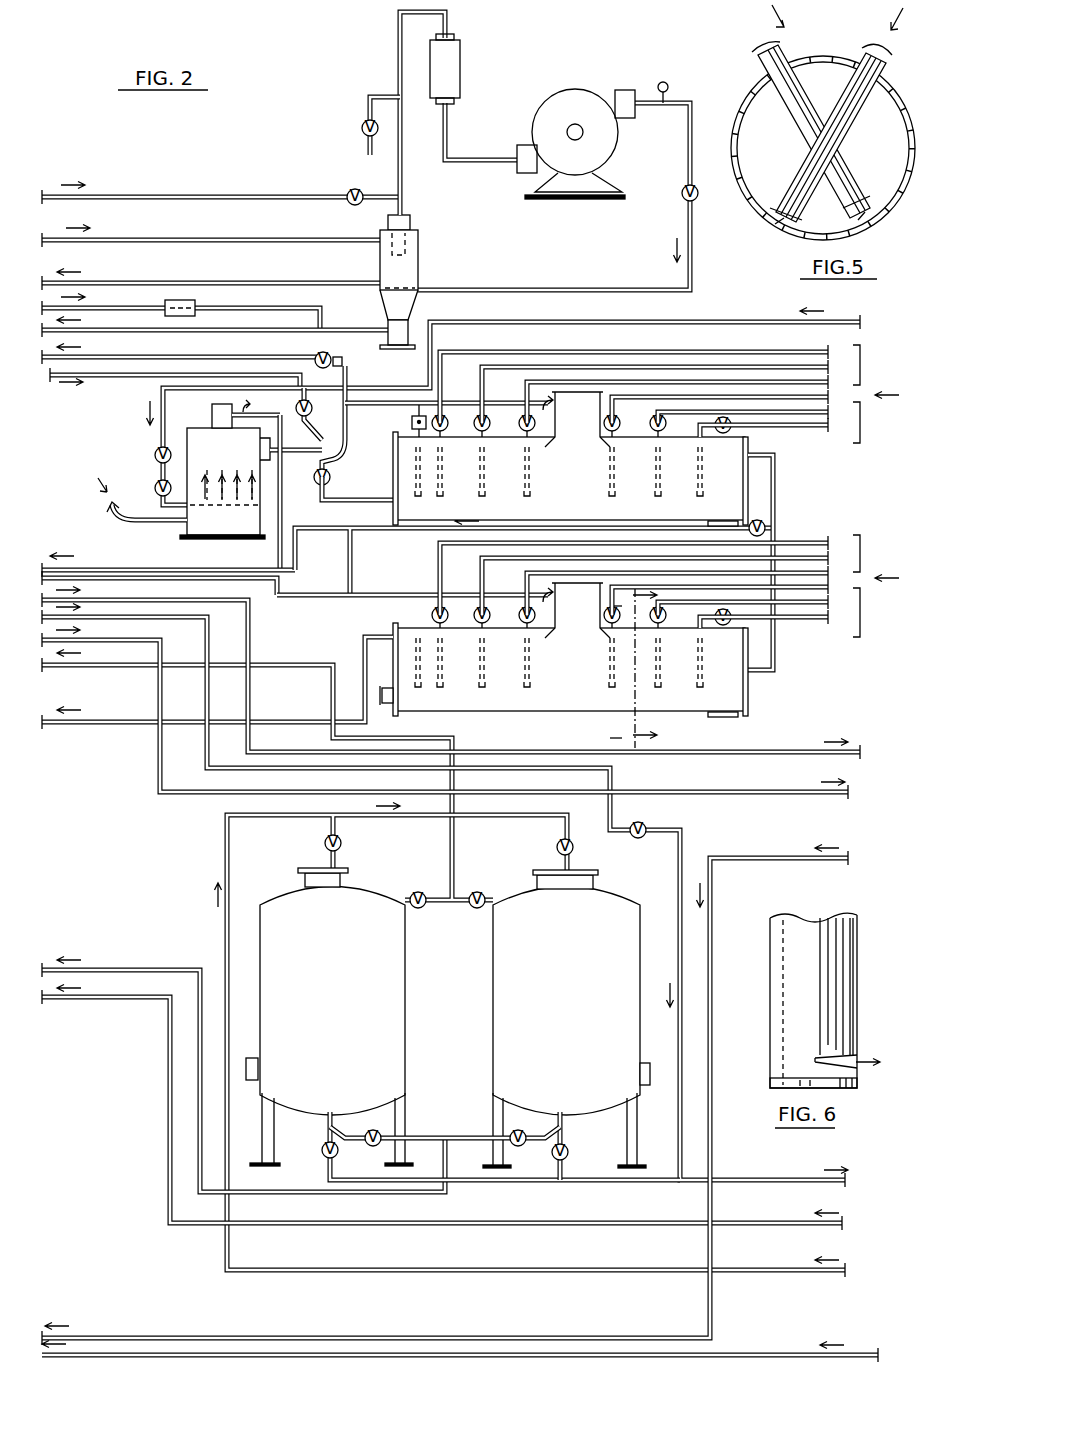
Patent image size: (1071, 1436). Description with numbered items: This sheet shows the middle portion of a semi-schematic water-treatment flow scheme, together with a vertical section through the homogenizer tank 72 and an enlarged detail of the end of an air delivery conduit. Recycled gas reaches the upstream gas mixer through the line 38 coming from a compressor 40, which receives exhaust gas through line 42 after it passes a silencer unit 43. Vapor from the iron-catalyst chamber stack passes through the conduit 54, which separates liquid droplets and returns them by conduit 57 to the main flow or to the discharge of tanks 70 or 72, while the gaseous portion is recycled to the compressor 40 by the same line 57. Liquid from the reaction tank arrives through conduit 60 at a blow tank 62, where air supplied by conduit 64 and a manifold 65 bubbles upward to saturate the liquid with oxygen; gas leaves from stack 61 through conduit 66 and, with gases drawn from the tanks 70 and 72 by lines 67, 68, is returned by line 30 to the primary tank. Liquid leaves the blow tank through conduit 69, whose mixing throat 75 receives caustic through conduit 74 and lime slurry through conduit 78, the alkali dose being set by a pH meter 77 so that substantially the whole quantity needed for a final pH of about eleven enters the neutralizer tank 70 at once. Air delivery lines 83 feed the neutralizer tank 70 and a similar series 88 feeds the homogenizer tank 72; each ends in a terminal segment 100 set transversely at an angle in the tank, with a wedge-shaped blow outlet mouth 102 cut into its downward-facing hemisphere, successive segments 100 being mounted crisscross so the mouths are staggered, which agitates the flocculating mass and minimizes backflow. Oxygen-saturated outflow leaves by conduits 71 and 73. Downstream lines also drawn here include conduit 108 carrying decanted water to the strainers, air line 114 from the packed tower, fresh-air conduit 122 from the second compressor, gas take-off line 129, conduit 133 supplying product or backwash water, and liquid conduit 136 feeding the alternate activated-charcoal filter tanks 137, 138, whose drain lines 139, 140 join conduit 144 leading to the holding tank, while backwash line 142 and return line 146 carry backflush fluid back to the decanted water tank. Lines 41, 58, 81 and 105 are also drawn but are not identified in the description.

In FIG. 2, the line 30 is at (130, 569).
In FIG. 2, the line 38 is at (48, 282).
In FIG. 2, the compressor 40 is at (565, 108).
In FIG. 2, the conduit 41 is at (50, 193).
In FIG. 2, the line 42 is at (362, 150).
In FIG. 2, the silencer unit 43 is at (455, 58).
In FIG. 2, the conduit 54 is at (48, 237).
In FIG. 2, the conduit 57 is at (55, 330).
In FIG. 2, the conduit 58 is at (405, 163).
In FIG. 2, the conduit 60 is at (120, 518).
In FIG. 2, the stack 61 is at (212, 415).
In FIG. 2, the blow tank 62 is at (208, 523).
In FIG. 2, the conduit 64 is at (160, 438).
In FIG. 2, the manifold 65 is at (212, 480).
In FIG. 2, the conduit 66 is at (283, 545).
In FIG. 2, the line 67 is at (352, 527).
In FIG. 2, the line 68 is at (375, 593).
In FIG. 2, the conduit 69 is at (322, 497).
In FIG. 2, the neutralizer tank 70 is at (546, 459).
In FIG. 2, the conduit 71 is at (773, 512).
In FIG. 2, the homogenizer tank 72 is at (540, 700).
In FIG. 5, the homogenizer tank 72 is at (758, 224).
In FIG. 2, the outflow conduit 73 is at (55, 723).
In FIG. 2, the conduit 74 is at (55, 306).
In FIG. 2, the mixing throat 75 is at (345, 440).
In FIG. 2, the pH meter 77 is at (412, 427).
In FIG. 2, the conduit 78 is at (55, 377).
In FIG. 2, the conduit 81 is at (45, 357).
In FIG. 2, the air delivery lines 83 is at (830, 432).
In FIG. 2, the air delivery lines 88 is at (830, 618).
In FIG. 5, the terminal segment 100 is at (785, 92).
In FIG. 6, the terminal segment 100 is at (828, 937).
In FIG. 5, the blow outlet mouth 102 is at (835, 220).
In FIG. 6, the blow outlet mouth 102 is at (855, 1058).
In FIG. 2, the conduit 105 is at (167, 578).
In FIG. 2, the conduit 108 is at (55, 600).
In FIG. 2, the line 114 is at (780, 858).
In FIG. 2, the conduit 122 is at (745, 1355).
In FIG. 2, the gas take-off line 129 is at (55, 640).
In FIG. 2, the conduit 133 is at (55, 617).
In FIG. 2, the liquid conduit 136 is at (228, 845).
In FIG. 2, the activated-charcoal filter tank 137 is at (393, 1038).
In FIG. 2, the activated-charcoal filter tank 138 is at (513, 968).
In FIG. 2, the drain line 139 is at (322, 1155).
In FIG. 2, the drain line 140 is at (570, 1155).
In FIG. 2, the backwash line 142 is at (95, 1000).
In FIG. 2, the conduit 144 is at (100, 965).
In FIG. 2, the return line 146 is at (52, 665).